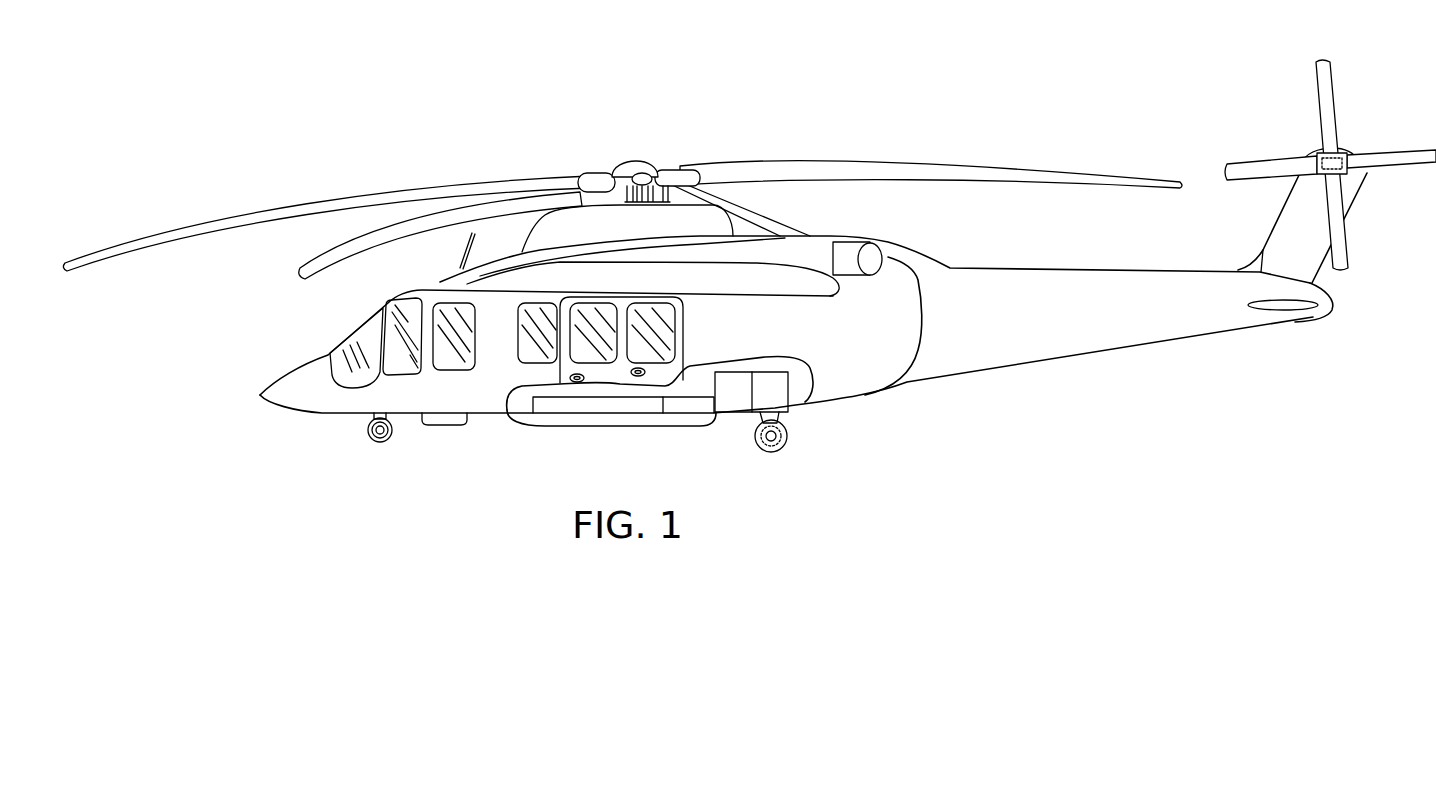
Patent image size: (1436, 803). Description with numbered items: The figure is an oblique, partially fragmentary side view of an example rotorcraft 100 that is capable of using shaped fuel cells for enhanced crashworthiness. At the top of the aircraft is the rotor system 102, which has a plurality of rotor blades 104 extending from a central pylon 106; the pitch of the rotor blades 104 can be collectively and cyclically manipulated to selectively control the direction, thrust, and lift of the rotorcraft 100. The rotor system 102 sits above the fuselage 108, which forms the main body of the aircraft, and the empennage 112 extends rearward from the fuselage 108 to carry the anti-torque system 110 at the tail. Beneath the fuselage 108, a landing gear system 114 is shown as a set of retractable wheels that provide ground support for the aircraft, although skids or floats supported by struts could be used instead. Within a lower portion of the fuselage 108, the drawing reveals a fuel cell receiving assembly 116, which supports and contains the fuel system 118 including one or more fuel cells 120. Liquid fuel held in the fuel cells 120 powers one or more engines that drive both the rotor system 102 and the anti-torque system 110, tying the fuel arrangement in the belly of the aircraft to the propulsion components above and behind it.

The rotorcraft 100 is at (802, 118).
The rotor system 102 is at (912, 158).
The rotor blades 104 is at (1007, 167).
The central pylon 106 is at (633, 162).
The fuselage 108 is at (317, 417).
The anti-torque system 110 is at (1387, 148).
The empennage 112 is at (988, 368).
The landing gear system 114 is at (775, 456).
The fuel cell receiving assembly 116 is at (796, 386).
The fuel system 118 is at (593, 420).
The fuel cells 120 is at (682, 410).